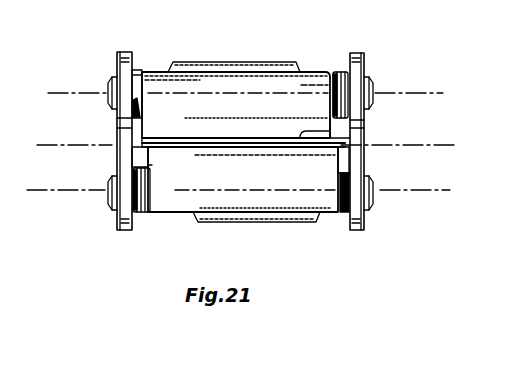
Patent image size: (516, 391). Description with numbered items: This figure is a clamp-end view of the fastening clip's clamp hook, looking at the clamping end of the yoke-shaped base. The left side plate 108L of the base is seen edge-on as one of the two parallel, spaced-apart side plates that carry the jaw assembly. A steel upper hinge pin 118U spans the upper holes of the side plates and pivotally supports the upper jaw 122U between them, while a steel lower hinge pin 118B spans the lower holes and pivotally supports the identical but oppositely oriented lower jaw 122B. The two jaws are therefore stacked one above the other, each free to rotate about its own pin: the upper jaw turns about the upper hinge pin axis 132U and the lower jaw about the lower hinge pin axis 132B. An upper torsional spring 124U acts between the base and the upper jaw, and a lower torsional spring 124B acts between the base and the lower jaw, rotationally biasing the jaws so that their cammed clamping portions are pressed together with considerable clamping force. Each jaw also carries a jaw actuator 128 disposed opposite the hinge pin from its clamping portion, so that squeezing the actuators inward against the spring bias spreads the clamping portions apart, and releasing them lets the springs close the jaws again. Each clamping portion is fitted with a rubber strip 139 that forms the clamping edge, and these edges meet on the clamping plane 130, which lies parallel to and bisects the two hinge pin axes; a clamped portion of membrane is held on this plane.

The left side plate 108L is at (366, 173).
The upper hinge pin 118U is at (137, 71).
The lower hinge pin 118B is at (346, 232).
The upper jaw 122U is at (277, 88).
The lower jaw 122B is at (200, 197).
The upper torsional spring 124U is at (338, 72).
The lower torsional spring 124B is at (143, 213).
The jaw actuator 128 is at (218, 62).
The clamping plane 130 is at (418, 145).
The upper hinge pin axis 132U is at (85, 66).
The lower hinge pin axis 132B is at (432, 190).
The rubber strip 139 is at (160, 156).